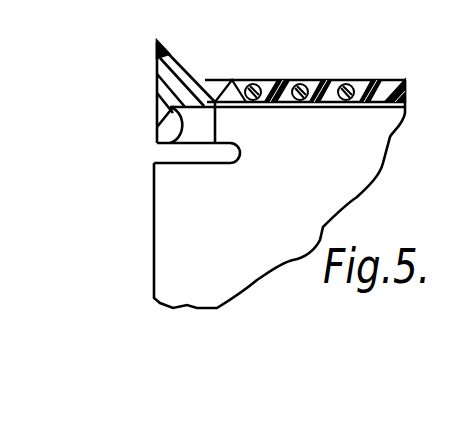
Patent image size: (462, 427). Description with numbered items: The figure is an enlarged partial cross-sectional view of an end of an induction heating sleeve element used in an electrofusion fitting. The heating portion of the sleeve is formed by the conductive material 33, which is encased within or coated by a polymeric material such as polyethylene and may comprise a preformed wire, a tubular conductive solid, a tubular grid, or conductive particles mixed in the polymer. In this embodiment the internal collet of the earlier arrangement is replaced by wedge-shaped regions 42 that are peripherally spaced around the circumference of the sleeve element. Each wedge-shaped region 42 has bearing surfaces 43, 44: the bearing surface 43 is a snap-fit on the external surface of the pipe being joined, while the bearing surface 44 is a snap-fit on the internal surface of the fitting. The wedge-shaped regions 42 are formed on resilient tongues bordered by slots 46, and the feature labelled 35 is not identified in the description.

The conductive material 33 is at (253, 85).
The support surface 35 is at (295, 108).
The wedge-shaped regions 42 is at (157, 68).
The bearing surface 43 is at (178, 143).
The bearing surface 44 is at (193, 66).
The slots 46 is at (200, 152).